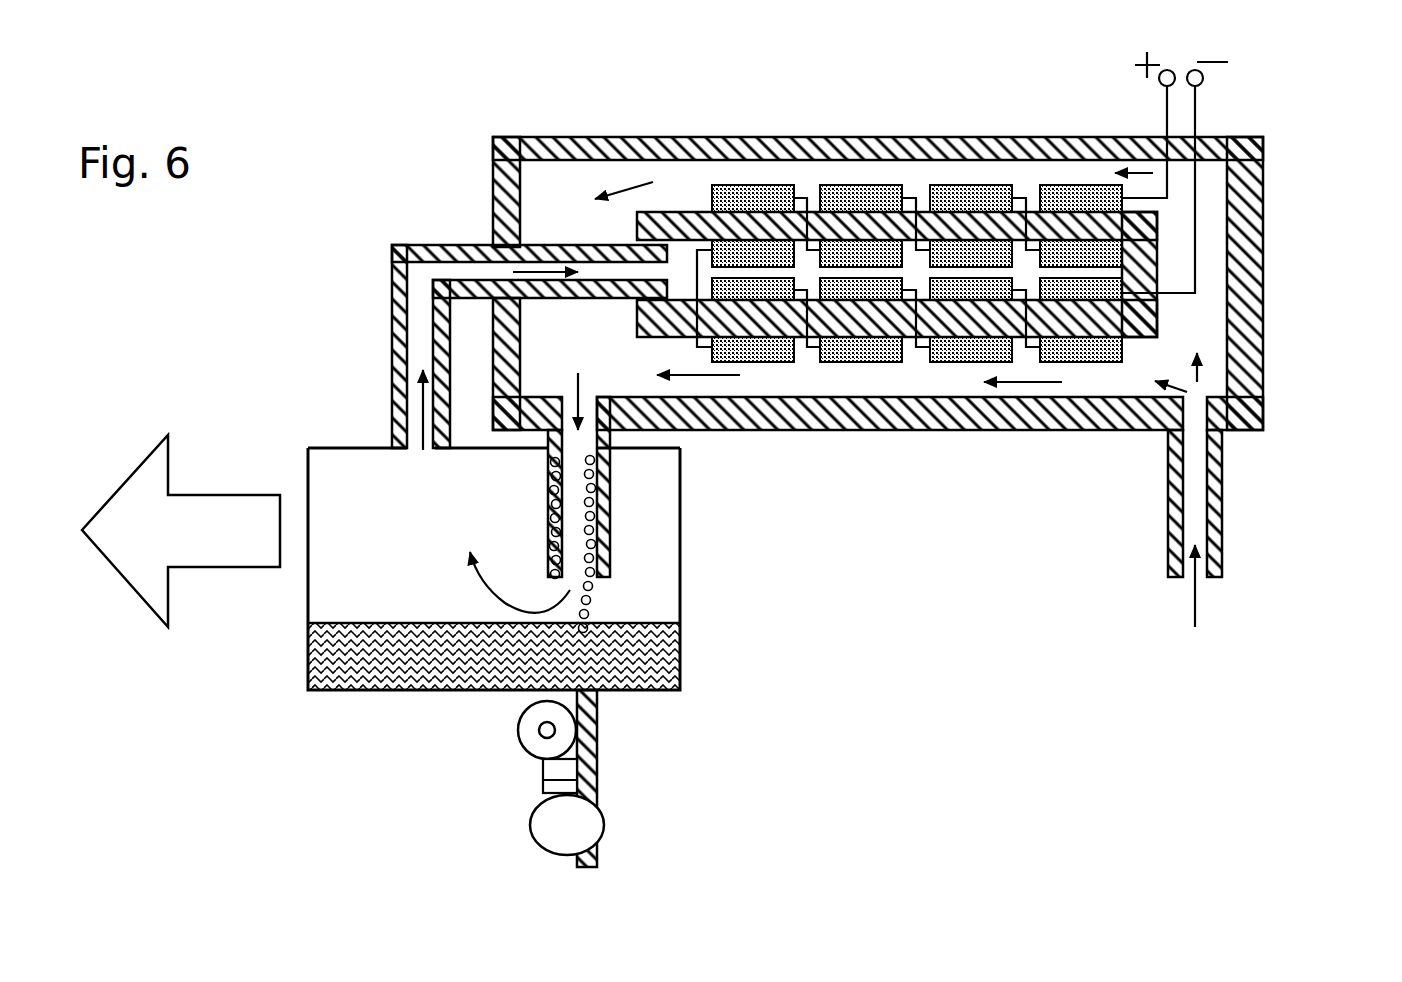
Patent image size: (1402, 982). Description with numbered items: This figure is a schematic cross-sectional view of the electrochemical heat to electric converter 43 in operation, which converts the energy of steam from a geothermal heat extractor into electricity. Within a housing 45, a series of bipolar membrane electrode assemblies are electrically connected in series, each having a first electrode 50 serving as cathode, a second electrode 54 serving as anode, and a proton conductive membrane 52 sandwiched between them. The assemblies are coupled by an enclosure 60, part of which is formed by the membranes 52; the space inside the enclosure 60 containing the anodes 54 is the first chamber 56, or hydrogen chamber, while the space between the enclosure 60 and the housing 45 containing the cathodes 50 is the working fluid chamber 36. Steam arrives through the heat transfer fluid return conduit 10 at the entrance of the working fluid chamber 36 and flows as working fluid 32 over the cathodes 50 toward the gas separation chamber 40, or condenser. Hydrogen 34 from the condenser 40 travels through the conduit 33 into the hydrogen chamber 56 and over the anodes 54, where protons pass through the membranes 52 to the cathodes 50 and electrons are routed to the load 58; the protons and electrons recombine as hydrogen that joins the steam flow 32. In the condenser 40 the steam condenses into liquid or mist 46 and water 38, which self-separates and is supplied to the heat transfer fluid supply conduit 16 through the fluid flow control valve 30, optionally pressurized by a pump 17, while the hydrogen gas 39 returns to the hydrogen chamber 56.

The heat transfer fluid return conduit 10 is at (1168, 533).
The heat transfer fluid supply conduit 16 is at (600, 845).
The pump 17 is at (517, 738).
The fluid flow control valve 30 is at (567, 825).
The working fluid 32 is at (592, 181).
The conduit 33 is at (392, 258).
The hydrogen 34 is at (423, 407).
The working fluid chamber 36 is at (1198, 378).
The water 38 is at (635, 665).
The hydrogen gas 39 is at (500, 605).
The gas separation chamber 40 is at (308, 460).
The electrochemical heat to electric converter 43 is at (493, 173).
The housing 45 is at (1263, 247).
The liquid or mist 46 is at (600, 580).
The first electrode 50 is at (843, 186).
The proton conductive membrane 52 is at (953, 205).
The second electrode 54 is at (1035, 207).
The first chamber 56 is at (810, 273).
The load 58 is at (1232, 93).
The enclosure 60 is at (680, 212).